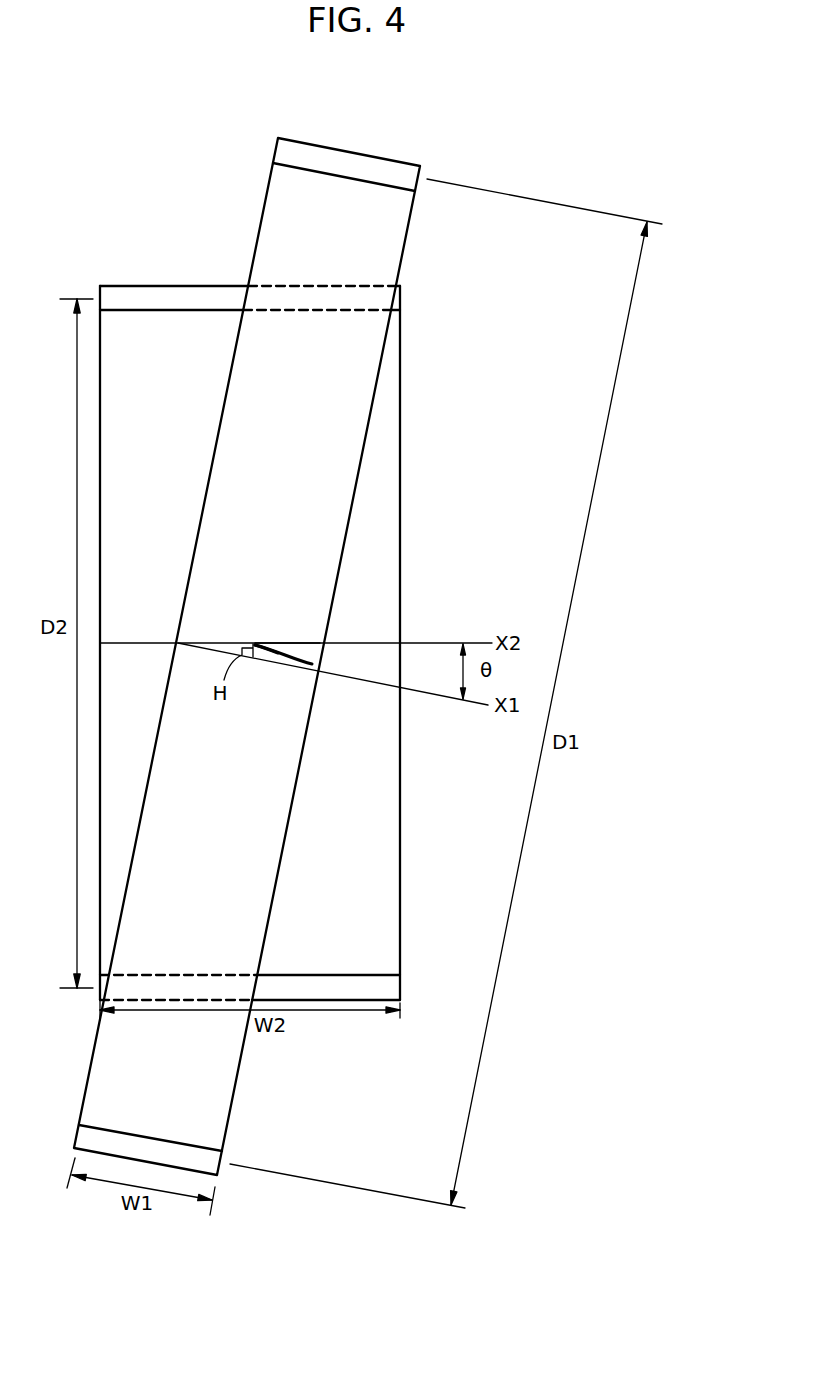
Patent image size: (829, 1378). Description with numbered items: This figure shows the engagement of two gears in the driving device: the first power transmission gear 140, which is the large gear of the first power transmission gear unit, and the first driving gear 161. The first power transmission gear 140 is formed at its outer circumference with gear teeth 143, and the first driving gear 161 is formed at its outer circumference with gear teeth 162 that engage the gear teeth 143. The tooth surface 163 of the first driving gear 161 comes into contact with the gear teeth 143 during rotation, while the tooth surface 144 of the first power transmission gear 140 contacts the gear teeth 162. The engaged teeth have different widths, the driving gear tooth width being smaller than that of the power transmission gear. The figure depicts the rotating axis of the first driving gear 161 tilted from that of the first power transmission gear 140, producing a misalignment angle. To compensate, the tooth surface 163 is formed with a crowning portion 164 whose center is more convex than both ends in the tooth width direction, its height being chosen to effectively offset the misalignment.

The first power transmission gear 140 is at (416, 523).
The gear teeth 143 is at (165, 298).
The tooth surface 144 is at (297, 646).
The first driving gear 161 is at (440, 159).
The gear teeth 162 is at (343, 163).
The tooth surface 163 is at (312, 664).
The crowning portion 164 is at (265, 655).